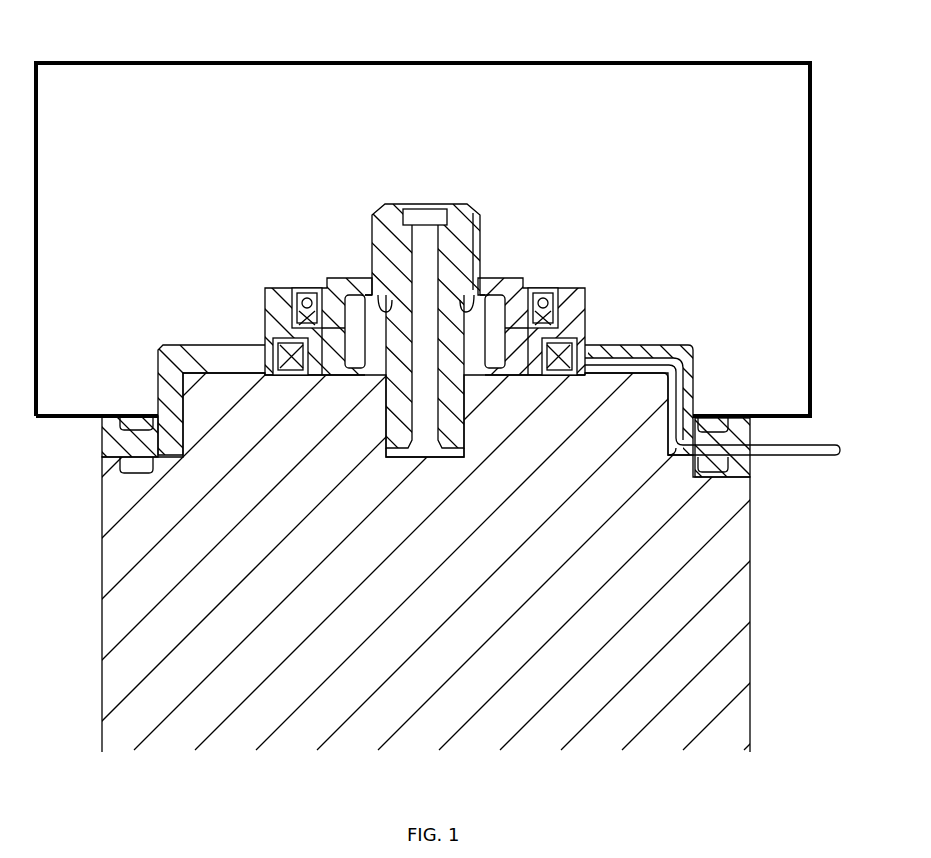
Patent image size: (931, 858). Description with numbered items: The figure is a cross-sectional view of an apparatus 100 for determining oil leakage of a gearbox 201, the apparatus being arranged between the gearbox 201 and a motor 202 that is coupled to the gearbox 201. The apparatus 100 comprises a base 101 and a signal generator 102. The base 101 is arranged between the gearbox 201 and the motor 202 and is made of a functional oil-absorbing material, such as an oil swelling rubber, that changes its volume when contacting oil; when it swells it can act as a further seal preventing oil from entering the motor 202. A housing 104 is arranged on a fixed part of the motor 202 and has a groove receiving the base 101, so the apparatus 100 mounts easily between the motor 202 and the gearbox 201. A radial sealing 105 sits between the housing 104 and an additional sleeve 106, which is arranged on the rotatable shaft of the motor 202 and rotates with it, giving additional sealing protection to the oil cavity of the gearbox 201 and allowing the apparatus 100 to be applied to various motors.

The apparatus for determining oil leakage 100 is at (452, 344).
The base 101 is at (557, 345).
The signal generator 102 is at (684, 392).
The housing 104 is at (680, 348).
The radial sealing 105 is at (300, 288).
The additional sleeve 106 is at (345, 277).
The gearbox 201 is at (167, 77).
The motor 202 is at (102, 510).